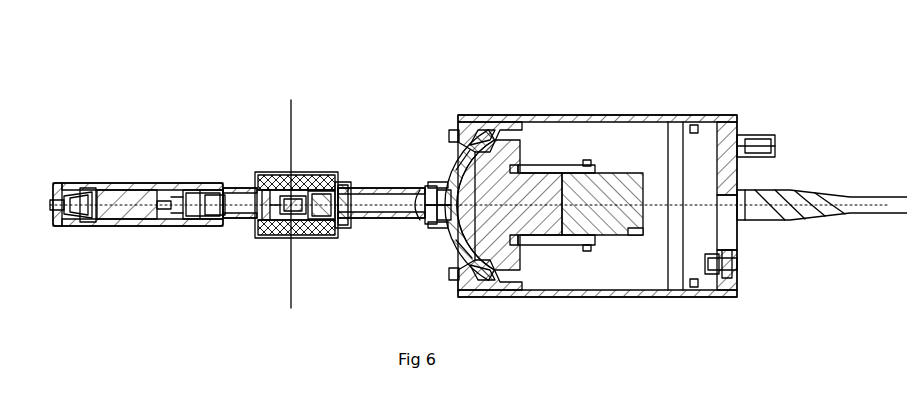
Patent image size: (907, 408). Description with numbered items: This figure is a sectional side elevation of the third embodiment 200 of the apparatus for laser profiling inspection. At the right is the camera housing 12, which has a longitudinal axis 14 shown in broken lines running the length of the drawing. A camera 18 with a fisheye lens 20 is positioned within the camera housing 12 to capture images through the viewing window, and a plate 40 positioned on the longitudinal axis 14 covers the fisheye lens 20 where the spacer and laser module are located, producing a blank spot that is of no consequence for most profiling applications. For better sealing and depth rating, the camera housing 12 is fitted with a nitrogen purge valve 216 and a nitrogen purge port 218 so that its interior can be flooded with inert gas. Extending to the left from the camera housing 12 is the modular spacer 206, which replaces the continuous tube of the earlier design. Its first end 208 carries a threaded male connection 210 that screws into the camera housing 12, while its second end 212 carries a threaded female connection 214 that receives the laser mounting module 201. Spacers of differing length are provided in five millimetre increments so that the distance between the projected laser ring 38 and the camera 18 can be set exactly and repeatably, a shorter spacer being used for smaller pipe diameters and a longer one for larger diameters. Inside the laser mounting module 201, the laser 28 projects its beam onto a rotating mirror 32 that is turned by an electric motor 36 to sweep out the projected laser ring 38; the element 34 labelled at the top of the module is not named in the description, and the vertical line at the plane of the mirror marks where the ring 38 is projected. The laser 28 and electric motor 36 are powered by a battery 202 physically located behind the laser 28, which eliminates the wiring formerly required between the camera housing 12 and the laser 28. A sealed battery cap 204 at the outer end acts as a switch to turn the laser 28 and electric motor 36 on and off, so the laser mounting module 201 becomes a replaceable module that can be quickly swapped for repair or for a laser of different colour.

The third embodiment 200 is at (399, 68).
The laser mounting module 201 is at (133, 170).
The battery 202 is at (138, 228).
The sealed battery cap 204 is at (53, 195).
The laser 28 is at (214, 190).
The coupling housing 34 is at (270, 192).
The rotating mirror 32 is at (296, 236).
The electric motor 36 is at (326, 224).
The projected laser ring 38 is at (291, 286).
The modular spacer 206 is at (384, 160).
The second end 212 is at (348, 190).
The threaded female connection 214 is at (352, 226).
The first end 208 is at (430, 186).
The threaded male connection 210 is at (432, 222).
The camera housing 12 is at (623, 115).
The fisheye lens 20 is at (432, 140).
The plate 40 is at (447, 238).
The longitudinal axis 14 is at (638, 232).
The camera 18 is at (580, 208).
The nitrogen purge valve 216 is at (756, 135).
The nitrogen purge port 218 is at (742, 262).